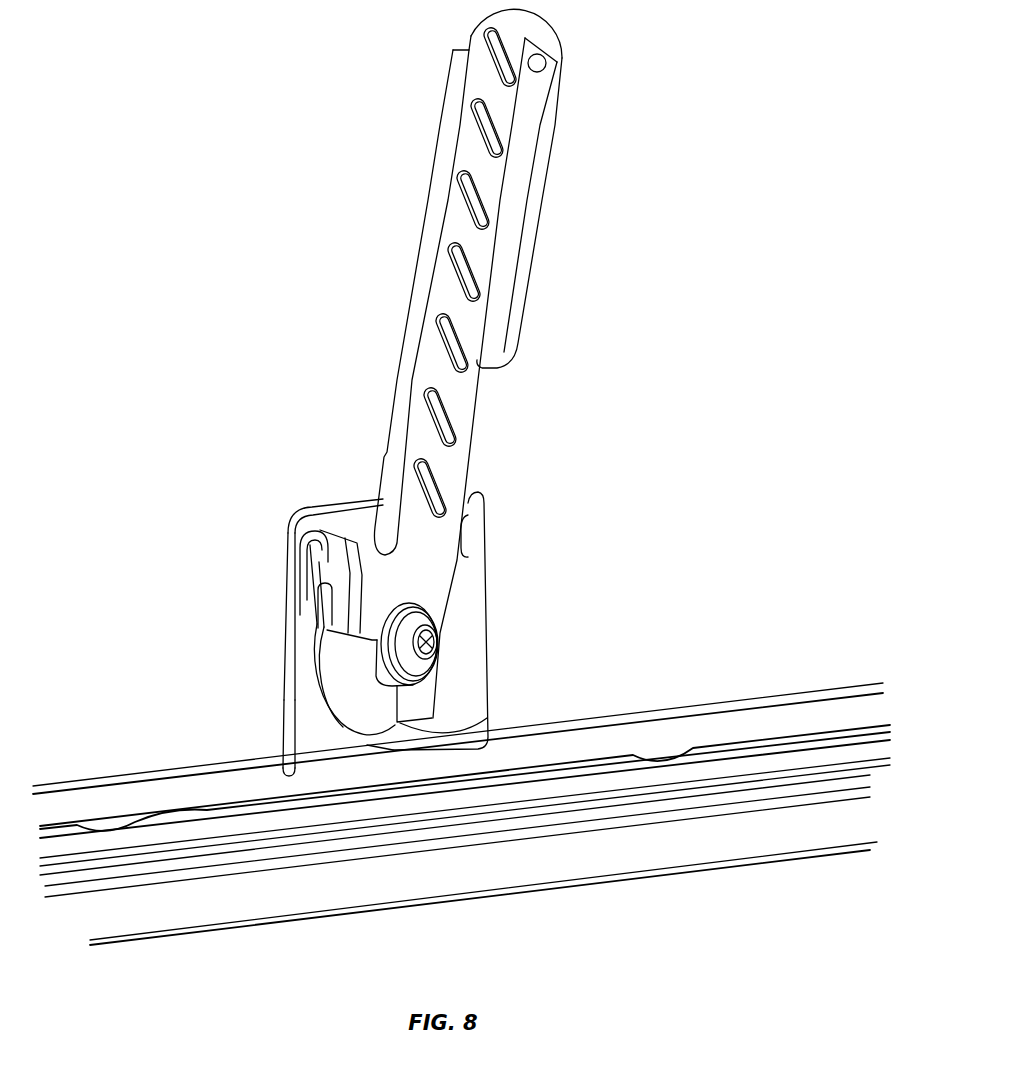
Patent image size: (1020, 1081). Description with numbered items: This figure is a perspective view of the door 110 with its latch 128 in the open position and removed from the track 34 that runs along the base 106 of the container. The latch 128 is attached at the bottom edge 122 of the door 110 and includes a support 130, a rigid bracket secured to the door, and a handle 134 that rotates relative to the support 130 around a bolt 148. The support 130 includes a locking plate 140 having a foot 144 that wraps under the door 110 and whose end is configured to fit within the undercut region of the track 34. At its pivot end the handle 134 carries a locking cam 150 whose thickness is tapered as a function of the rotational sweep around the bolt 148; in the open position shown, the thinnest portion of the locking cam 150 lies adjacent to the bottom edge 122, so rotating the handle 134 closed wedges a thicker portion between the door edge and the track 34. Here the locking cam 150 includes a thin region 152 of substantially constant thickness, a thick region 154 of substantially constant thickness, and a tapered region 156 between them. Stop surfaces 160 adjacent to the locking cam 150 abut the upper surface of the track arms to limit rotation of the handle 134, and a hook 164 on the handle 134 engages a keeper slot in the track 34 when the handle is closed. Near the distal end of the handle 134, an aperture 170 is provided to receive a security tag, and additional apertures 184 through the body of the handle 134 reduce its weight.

The door 110 is at (197, 287).
The handle 134 is at (440, 188).
The apertures 184 is at (498, 40).
The aperture 170 is at (544, 59).
The bolt 148 is at (418, 623).
The locking plate 140 is at (470, 690).
The stop surfaces 160 is at (360, 572).
The thick region 154 is at (300, 610).
The hook 164 is at (315, 617).
The support 130 is at (287, 678).
The tapered region 156 is at (347, 705).
The foot 144 is at (283, 774).
The locking cam 150 is at (372, 717).
The thin region 152 is at (385, 732).
The latch 128 is at (541, 543).
The bottom edge 122 is at (727, 745).
The track 34 is at (743, 757).
The base 106 is at (613, 860).